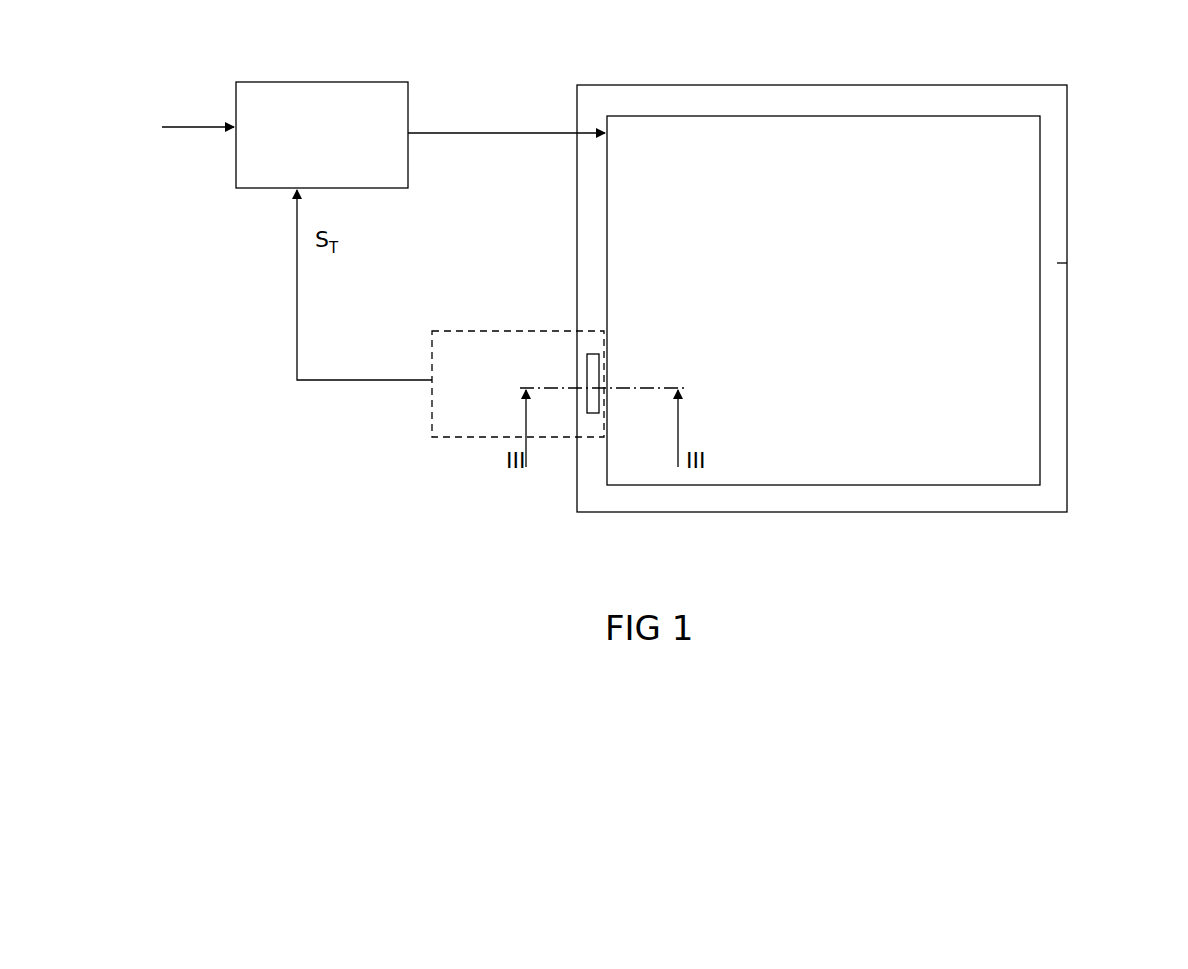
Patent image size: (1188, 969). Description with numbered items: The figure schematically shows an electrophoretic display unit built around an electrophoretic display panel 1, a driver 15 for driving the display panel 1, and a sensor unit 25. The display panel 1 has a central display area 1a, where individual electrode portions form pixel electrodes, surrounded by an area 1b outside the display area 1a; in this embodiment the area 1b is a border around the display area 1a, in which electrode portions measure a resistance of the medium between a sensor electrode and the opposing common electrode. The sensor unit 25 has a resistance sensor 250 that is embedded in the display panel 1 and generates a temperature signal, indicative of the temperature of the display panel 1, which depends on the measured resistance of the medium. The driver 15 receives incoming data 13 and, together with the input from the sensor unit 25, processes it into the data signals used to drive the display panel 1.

The electrophoretic display panel 1 is at (951, 537).
The central display area 1a is at (977, 166).
The border area 1b is at (1067, 263).
The incoming data 13 is at (198, 111).
The driver 15 is at (322, 135).
The sensor unit 25 is at (506, 330).
The resistance sensor 250 is at (593, 368).